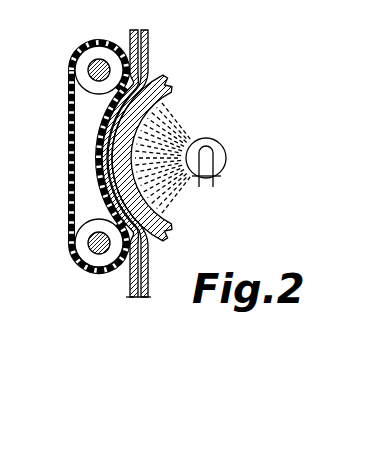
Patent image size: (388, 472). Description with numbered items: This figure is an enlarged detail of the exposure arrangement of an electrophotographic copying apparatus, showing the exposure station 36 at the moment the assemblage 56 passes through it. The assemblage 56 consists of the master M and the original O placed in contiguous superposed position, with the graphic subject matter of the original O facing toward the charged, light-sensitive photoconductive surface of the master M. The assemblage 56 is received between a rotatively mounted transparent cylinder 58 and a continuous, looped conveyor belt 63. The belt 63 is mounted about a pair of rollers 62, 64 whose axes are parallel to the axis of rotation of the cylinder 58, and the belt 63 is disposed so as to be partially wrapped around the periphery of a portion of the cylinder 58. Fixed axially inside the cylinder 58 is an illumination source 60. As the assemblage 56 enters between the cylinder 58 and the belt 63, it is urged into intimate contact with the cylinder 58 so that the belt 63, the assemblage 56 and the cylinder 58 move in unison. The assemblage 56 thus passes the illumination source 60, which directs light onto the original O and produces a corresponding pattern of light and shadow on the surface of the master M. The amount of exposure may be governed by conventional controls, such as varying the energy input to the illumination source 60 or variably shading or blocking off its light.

The exposure station 36 is at (50, 148).
The assemblage 56 is at (163, 54).
The transparent cylinder 58 is at (172, 95).
The illumination source 60 is at (226, 160).
The roller 62 is at (99, 47).
The conveyor belt 63 is at (68, 72).
The roller 64 is at (103, 266).
The master M is at (131, 38).
The original O is at (148, 37).